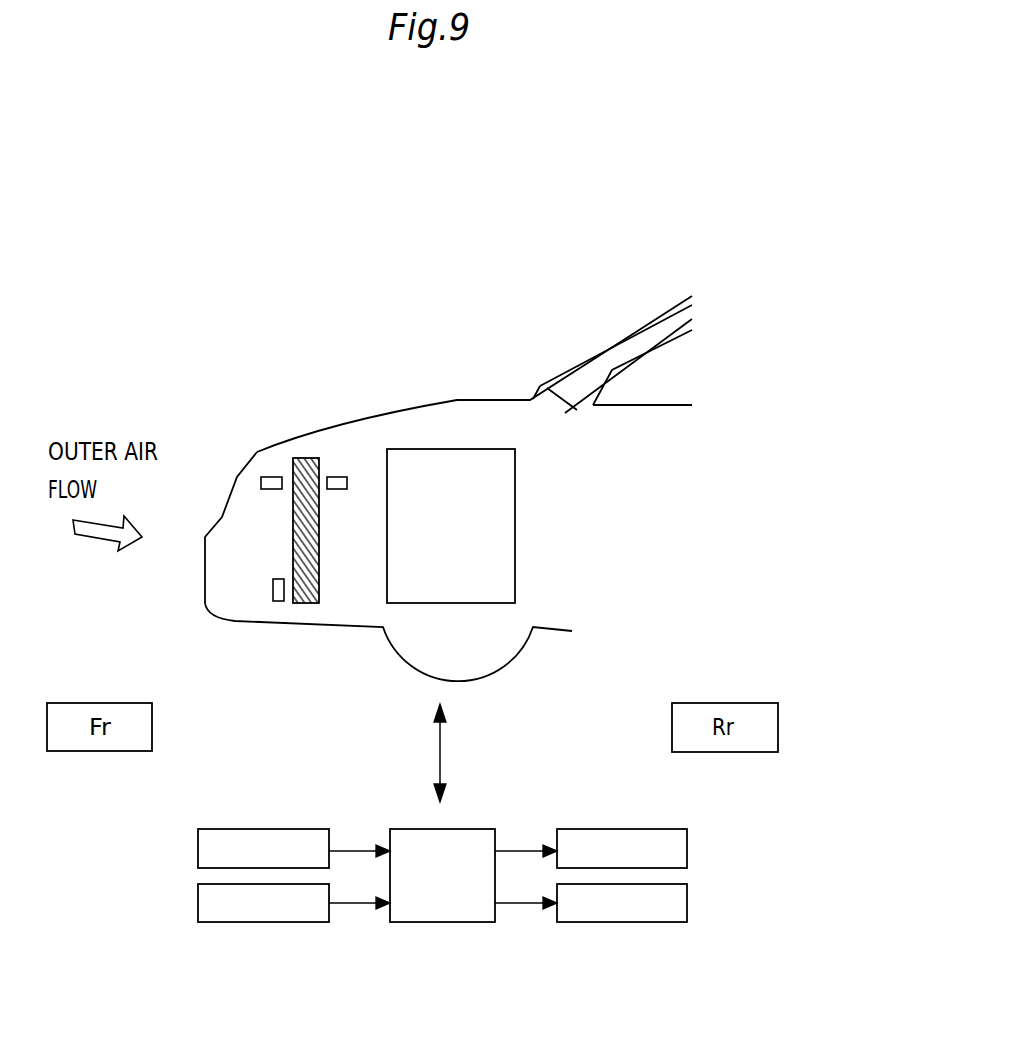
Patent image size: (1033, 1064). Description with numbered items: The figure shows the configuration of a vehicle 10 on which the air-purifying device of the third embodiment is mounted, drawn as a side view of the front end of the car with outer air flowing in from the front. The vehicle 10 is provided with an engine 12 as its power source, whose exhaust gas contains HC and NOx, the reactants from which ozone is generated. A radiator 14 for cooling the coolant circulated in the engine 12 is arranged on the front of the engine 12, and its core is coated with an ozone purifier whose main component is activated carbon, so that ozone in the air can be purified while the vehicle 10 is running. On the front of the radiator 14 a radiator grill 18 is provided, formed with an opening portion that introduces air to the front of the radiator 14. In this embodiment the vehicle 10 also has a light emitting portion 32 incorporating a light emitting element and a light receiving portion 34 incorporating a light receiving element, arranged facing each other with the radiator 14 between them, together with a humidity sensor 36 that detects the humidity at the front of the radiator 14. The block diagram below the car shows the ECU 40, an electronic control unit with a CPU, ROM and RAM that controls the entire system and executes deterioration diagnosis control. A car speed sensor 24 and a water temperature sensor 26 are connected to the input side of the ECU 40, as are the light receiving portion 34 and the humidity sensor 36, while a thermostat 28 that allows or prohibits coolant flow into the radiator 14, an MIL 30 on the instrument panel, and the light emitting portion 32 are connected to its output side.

The vehicle 10 is at (457, 400).
The engine 12 is at (515, 513).
The radiator 14 is at (305, 457).
The radiator grill 18 is at (240, 470).
The car speed sensor 24 is at (198, 849).
The water temperature sensor 26 is at (198, 902).
The thermostat 28 is at (687, 849).
The MIL (Malfunction Indication Lamp) 30 is at (687, 902).
The light emitting portion 32 is at (272, 476).
The light receiving portion 34 is at (337, 476).
The humidity sensor 36 is at (280, 602).
The ECU (Electronic Control Unit) 40 is at (470, 829).